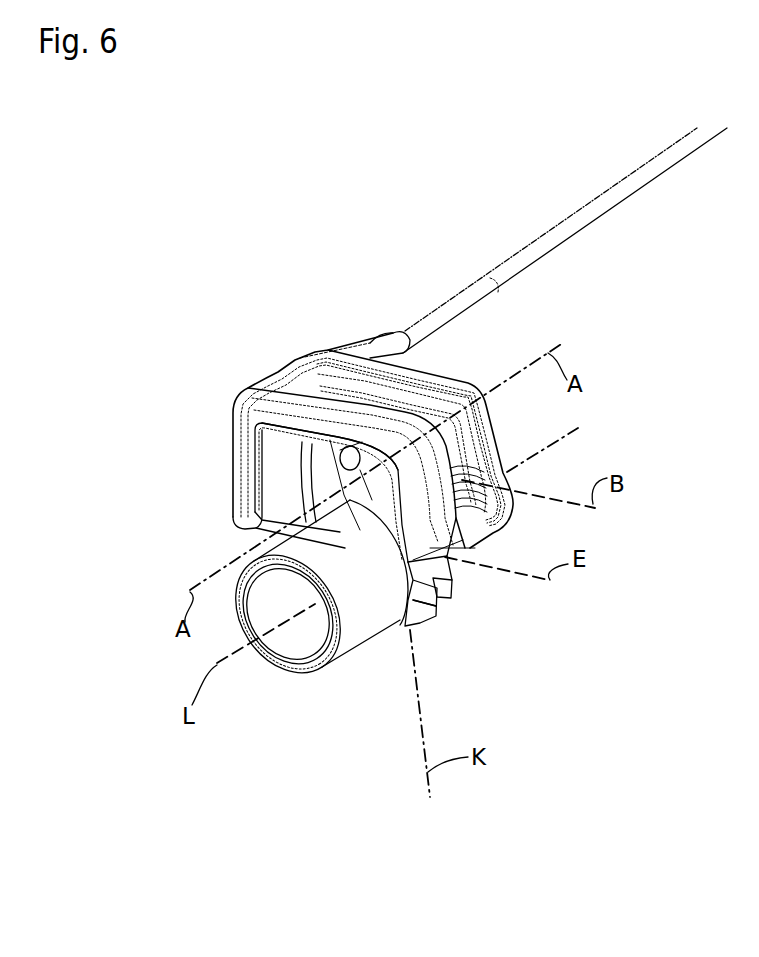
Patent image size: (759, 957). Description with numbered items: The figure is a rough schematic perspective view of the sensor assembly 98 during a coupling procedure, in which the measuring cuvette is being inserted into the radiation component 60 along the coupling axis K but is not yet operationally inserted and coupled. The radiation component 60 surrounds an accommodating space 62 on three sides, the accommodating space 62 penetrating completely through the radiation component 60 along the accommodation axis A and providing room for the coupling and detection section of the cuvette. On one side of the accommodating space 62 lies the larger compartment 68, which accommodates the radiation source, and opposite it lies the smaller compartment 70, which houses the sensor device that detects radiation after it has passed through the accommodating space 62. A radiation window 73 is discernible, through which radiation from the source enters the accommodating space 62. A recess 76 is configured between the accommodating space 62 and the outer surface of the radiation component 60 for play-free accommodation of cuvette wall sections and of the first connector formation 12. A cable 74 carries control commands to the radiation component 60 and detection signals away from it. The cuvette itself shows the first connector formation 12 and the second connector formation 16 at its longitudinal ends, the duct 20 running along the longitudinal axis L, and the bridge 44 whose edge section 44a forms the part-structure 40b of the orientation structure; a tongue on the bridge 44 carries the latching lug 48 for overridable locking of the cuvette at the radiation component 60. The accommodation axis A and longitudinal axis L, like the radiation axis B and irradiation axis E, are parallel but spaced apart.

The sensor assembly 98 is at (202, 300).
The radiation component 60 is at (339, 422).
The cable 74 is at (584, 218).
The recess 76 is at (328, 441).
The accommodating space 62 is at (338, 487).
The radiation window 73 is at (350, 458).
The larger compartment 68 is at (297, 508).
The second connector formation 16 is at (498, 478).
The smaller compartment 70 is at (445, 524).
The first connector formation 12 is at (311, 596).
The duct 20 is at (288, 614).
The latching lug 48 is at (450, 598).
The bridge 44 is at (450, 615).
The part-structure 40b is at (428, 622).
The edge section 44a is at (424, 603).